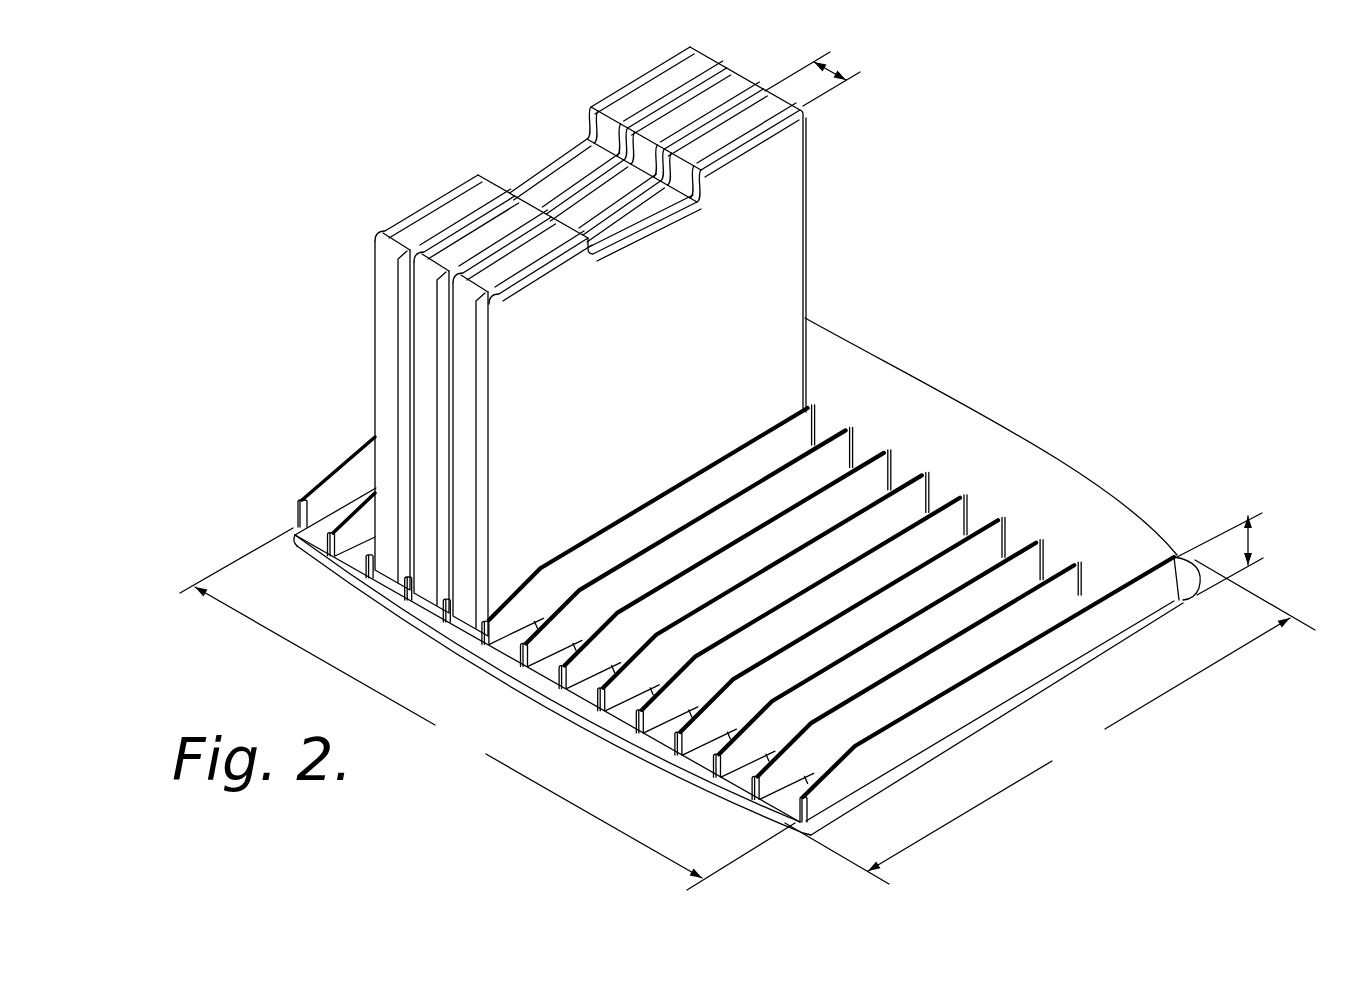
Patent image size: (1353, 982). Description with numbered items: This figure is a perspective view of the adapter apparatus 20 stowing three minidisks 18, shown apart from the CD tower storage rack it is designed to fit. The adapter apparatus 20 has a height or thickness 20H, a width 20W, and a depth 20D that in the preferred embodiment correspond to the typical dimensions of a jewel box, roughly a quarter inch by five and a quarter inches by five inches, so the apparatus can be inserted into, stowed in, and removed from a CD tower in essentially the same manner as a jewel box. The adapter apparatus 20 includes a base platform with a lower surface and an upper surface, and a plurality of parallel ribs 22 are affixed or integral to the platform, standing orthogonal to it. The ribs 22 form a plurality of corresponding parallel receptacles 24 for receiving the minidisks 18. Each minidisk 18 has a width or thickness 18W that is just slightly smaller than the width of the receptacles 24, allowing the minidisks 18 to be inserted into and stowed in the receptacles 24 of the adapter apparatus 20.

The minidisk 18 is at (669, 366).
The width or thickness of minidisk 18W is at (816, 79).
The adapter apparatus 20 is at (1033, 434).
The height or thickness of adapter apparatus 20H is at (1252, 538).
The depth of adapter apparatus 20D is at (1050, 722).
The width of adapter apparatus 20W is at (487, 709).
The parallel ribs 22 is at (750, 811).
The parallel receptacles 24 is at (846, 745).